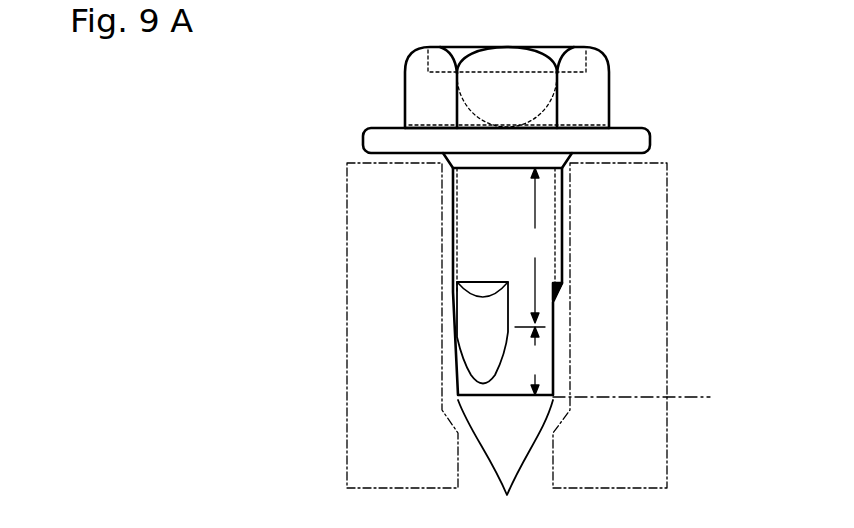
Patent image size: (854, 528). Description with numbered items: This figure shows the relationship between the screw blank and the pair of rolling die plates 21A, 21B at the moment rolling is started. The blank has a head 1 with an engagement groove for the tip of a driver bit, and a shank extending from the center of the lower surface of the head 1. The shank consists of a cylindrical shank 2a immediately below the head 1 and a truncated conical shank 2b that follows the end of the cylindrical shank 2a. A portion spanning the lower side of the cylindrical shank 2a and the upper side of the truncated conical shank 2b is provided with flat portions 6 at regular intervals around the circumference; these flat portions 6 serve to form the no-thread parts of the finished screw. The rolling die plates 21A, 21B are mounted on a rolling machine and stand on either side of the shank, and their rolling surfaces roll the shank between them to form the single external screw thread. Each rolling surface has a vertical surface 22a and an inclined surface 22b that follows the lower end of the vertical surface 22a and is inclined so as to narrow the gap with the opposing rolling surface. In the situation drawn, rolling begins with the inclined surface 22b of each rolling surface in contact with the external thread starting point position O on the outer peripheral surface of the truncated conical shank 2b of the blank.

The head 1 is at (598, 68).
The vertical surface 22a is at (562, 210).
The inclined surface 22b is at (505, 464).
The flat portion 6 is at (493, 330).
The cylindrical shank 2a is at (531, 247).
The truncated conical shank 2b is at (535, 361).
The rolling die plate 21A is at (418, 290).
The rolling die plate 21B is at (644, 290).
The external thread starting point position O is at (644, 399).